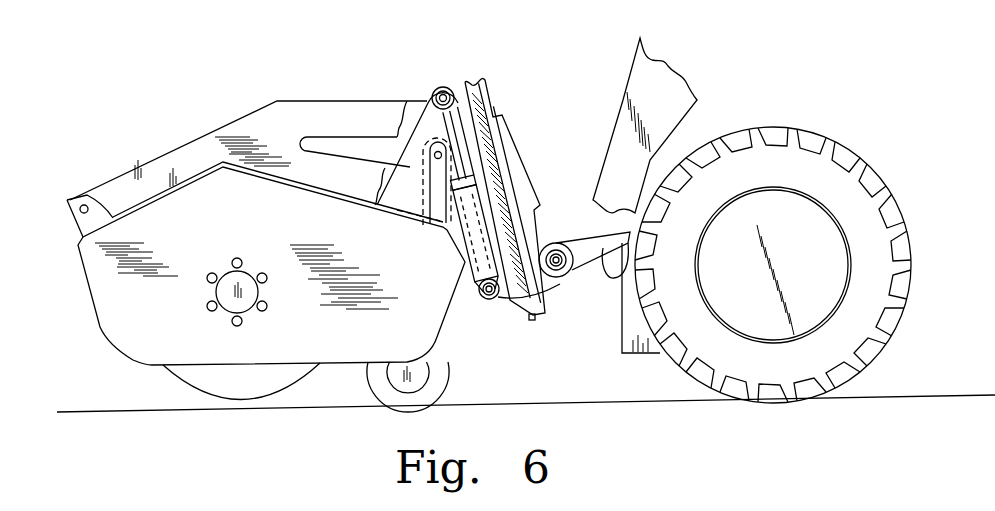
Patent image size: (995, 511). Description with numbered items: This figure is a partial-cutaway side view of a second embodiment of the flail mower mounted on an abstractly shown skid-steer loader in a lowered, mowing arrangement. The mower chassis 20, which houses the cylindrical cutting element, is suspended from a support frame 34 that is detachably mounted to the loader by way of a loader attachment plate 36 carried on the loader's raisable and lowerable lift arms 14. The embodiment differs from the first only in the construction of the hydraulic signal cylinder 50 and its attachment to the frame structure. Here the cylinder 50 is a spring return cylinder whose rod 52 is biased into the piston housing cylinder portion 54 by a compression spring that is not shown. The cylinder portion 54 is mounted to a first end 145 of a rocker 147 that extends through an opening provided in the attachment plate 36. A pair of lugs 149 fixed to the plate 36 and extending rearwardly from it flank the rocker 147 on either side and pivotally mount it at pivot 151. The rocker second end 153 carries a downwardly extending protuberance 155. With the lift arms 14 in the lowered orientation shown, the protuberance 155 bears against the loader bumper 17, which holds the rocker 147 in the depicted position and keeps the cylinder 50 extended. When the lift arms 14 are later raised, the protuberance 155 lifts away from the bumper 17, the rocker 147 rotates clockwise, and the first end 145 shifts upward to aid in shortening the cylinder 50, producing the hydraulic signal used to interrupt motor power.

The lift arms 14 is at (658, 82).
The loader bumper 17 is at (627, 355).
The chassis 20 is at (97, 333).
The support frame 34 is at (252, 94).
The loader attachment plate 36 is at (477, 90).
The hydraulic signal cylinder 50 is at (478, 198).
The rod 52 is at (452, 147).
The piston housing cylinder portion 54 is at (458, 248).
The first end 145 is at (497, 300).
The rocker 147 is at (550, 291).
The lugs 149 is at (552, 250).
The pivot 151 is at (563, 234).
The rocker second end 153 is at (603, 240).
The protuberance 155 is at (612, 270).